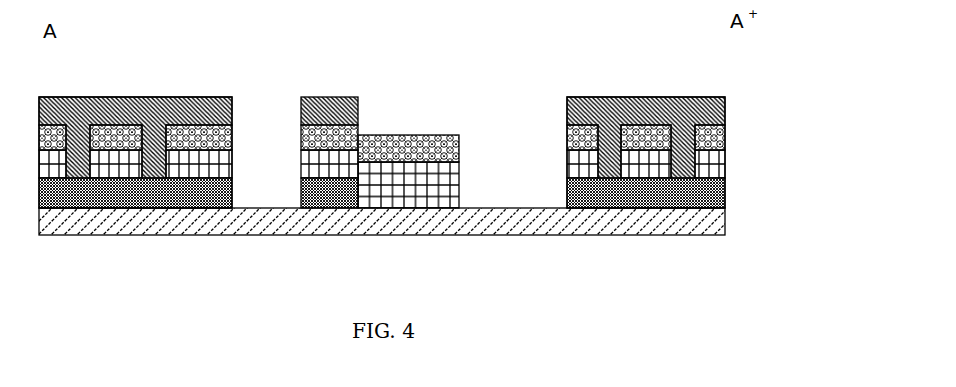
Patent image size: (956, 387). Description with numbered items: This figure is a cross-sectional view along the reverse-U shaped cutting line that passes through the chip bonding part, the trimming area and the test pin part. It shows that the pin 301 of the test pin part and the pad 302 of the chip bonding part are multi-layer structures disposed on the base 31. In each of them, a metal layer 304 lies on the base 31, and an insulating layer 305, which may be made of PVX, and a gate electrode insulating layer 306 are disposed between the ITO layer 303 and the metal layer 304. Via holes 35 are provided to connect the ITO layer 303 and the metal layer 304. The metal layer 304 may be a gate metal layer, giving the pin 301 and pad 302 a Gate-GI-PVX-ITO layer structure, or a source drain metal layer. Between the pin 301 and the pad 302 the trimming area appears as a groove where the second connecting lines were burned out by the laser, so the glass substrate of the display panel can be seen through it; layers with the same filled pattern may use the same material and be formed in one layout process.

The pin 301 is at (152, 80).
The pad 302 is at (727, 82).
The ITO layer 303 is at (725, 98).
The metal layer 304 is at (725, 194).
The insulating layer 305 is at (728, 128).
The gate electrode insulating layer 306 is at (725, 162).
The base 31 is at (725, 220).
The via holes 35 is at (627, 208).